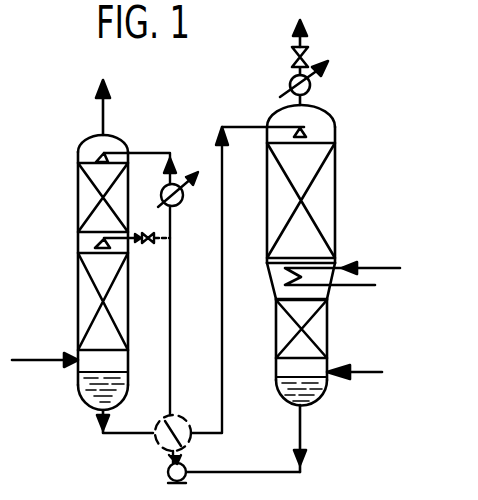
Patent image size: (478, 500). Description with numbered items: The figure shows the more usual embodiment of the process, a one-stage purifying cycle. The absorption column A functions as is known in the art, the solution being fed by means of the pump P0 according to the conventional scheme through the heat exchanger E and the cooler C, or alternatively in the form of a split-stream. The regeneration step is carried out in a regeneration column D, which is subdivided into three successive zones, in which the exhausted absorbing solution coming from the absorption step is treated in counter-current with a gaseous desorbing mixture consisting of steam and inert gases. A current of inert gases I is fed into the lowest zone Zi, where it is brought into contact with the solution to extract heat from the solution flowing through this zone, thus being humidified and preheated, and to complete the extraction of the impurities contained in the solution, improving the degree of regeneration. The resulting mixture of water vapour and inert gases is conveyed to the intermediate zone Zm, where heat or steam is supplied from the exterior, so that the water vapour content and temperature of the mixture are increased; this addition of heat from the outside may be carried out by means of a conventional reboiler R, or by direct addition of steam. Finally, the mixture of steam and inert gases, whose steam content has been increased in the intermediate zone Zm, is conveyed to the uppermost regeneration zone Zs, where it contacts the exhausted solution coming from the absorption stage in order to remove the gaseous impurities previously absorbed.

The absorption column A is at (82, 256).
The cooler C is at (165, 284).
The regeneration column D is at (295, 246).
The heat exchanger E is at (211, 289).
The pump P0 is at (224, 469).
The reboiler R is at (342, 282).
The current of inert gases I is at (354, 362).
The uppermost regeneration zone Zs is at (284, 203).
The intermediate zone Zm is at (280, 292).
The lowest zone Zi is at (280, 350).